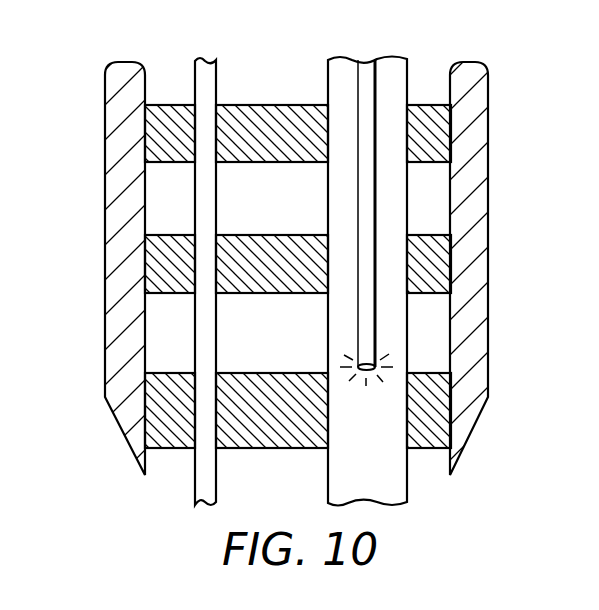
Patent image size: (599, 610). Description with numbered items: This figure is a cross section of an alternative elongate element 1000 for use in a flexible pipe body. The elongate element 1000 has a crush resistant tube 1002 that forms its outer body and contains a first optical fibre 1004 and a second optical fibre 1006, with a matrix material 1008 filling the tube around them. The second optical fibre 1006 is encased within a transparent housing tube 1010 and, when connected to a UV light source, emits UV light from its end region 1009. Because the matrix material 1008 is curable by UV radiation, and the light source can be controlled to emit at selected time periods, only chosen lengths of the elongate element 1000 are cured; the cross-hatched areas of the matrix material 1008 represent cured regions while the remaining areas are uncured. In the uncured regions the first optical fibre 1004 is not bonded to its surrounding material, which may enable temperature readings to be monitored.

The elongate element 1000 is at (503, 74).
The crush resistant tube 1002 is at (105, 93).
The first optical fibre 1004 is at (218, 199).
The second optical fibre 1006 is at (357, 87).
The matrix material 1008 is at (299, 346).
The end region 1009 is at (374, 372).
The transparent housing tube 1010 is at (407, 408).